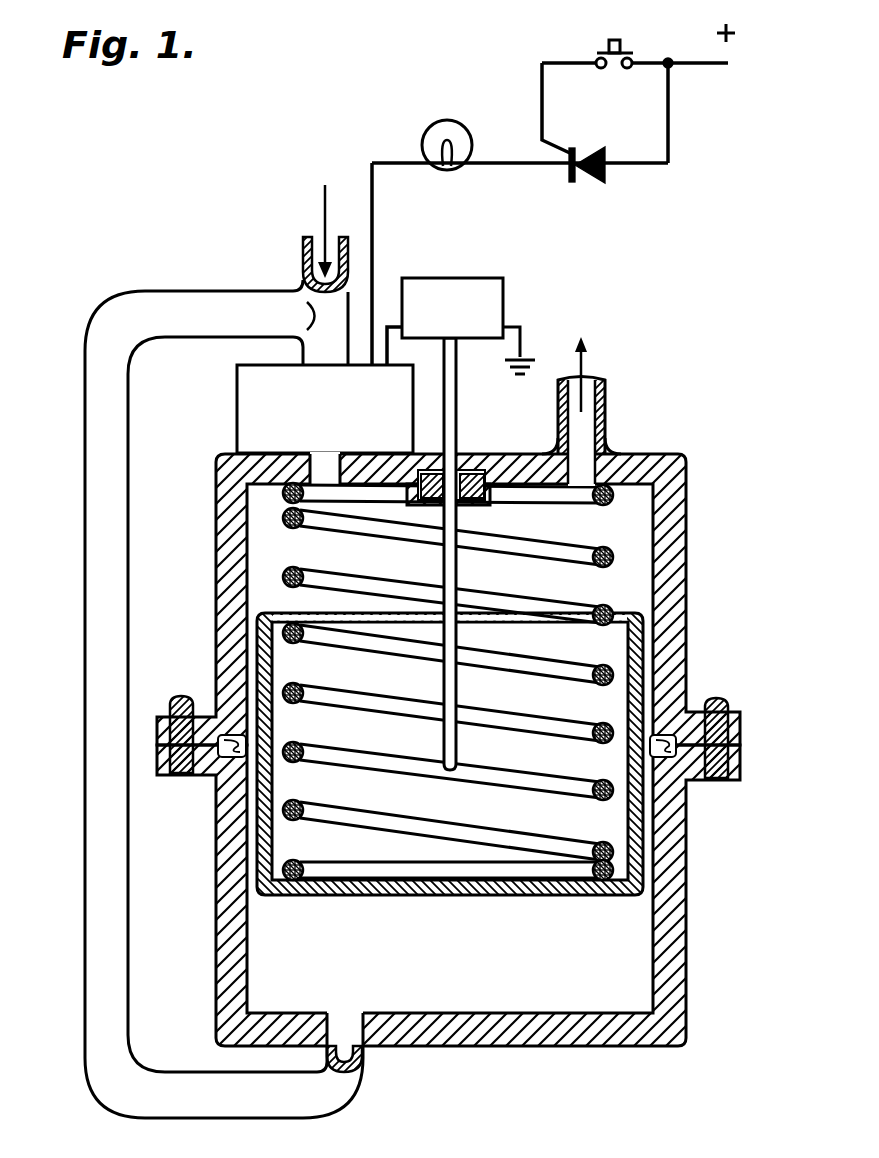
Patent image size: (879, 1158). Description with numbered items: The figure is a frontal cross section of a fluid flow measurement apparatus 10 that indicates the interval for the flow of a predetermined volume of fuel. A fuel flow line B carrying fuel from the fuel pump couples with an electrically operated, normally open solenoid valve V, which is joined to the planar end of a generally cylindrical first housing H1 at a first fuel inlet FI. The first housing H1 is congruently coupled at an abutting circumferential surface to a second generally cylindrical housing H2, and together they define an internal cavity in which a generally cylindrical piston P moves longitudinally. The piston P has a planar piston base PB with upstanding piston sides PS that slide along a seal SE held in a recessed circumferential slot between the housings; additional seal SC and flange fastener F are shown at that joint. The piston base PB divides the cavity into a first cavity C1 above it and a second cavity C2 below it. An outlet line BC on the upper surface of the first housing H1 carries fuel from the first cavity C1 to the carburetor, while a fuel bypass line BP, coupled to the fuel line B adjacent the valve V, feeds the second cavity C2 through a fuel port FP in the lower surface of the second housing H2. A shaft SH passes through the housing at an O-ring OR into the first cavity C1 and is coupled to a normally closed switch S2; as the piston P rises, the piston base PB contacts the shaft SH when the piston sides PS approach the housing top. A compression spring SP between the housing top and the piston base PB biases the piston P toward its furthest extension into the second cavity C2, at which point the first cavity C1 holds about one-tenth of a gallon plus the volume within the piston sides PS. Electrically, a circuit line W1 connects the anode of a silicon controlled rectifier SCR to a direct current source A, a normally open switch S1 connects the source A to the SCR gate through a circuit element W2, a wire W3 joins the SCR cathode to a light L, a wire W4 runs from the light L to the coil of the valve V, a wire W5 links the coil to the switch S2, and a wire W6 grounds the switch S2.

The fluid flow measurement apparatus 10 is at (475, 693).
The normally open switch S1 is at (591, 43).
The source of direct current energy A is at (688, 63).
The circuit line W1 is at (670, 122).
The circuit element W2 is at (547, 111).
The light emitting element L is at (437, 137).
The wire W3 is at (494, 166).
The silicon controlled rectifier SCR is at (615, 183).
The wire W4 is at (372, 216).
The wire W5 is at (381, 320).
The normally closed switch S2 is at (478, 278).
The wire W6 is at (521, 327).
The fuel flow line B is at (229, 229).
The solenoid valve V is at (237, 418).
The shaft SH is at (456, 395).
The O-ring OR is at (476, 472).
The outlet line BC is at (658, 400).
The compression spring SP is at (628, 528).
The first fuel inlet FI is at (332, 478).
The first housing H1 is at (686, 578).
The fuel bypass line BP is at (96, 549).
The first cavity C1 is at (450, 596).
The piston sides PS is at (272, 729).
The flange fastener F is at (724, 710).
The housing seal SC is at (207, 776).
The seal SE is at (668, 772).
The piston base PB is at (411, 894).
The piston P is at (450, 776).
The second cavity C2 is at (450, 955).
The fuel port FP is at (345, 1020).
The second housing H2 is at (686, 941).